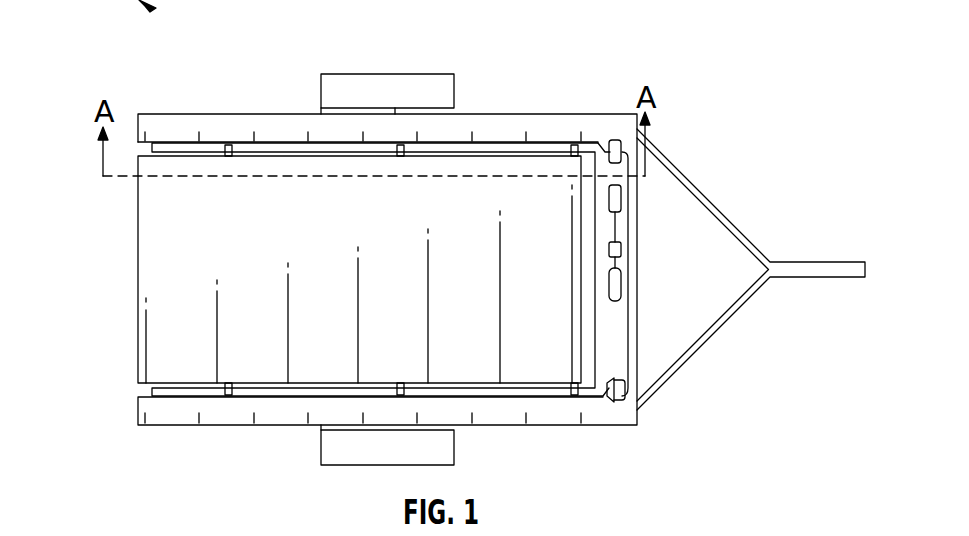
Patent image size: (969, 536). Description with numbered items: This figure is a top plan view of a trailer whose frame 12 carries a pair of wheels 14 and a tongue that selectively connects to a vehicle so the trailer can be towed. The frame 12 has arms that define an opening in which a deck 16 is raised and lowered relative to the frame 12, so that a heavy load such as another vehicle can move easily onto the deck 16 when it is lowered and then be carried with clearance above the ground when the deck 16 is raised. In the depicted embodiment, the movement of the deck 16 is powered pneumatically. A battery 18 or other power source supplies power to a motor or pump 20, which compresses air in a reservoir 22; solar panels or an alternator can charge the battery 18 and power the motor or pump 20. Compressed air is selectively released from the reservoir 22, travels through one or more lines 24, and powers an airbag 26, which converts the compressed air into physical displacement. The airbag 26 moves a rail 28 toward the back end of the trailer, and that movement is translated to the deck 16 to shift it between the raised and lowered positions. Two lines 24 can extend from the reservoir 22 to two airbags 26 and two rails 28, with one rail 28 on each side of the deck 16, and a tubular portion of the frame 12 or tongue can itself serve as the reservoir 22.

The frame 12 is at (171, 120).
The wheels 14 is at (392, 86).
The deck 16 is at (291, 219).
The battery 18 is at (618, 206).
The motor or pump 20 is at (618, 249).
The reservoir 22 is at (618, 285).
The lines 24 is at (632, 200).
The airbag 26 is at (613, 140).
The rail 28 is at (487, 147).